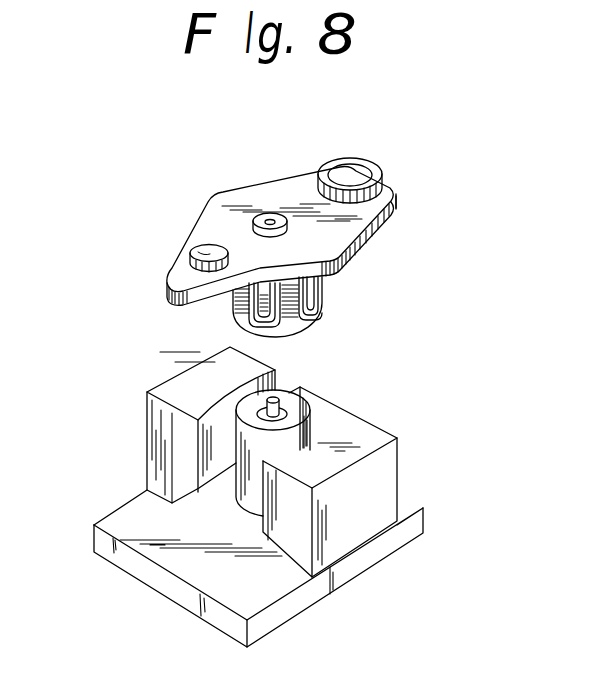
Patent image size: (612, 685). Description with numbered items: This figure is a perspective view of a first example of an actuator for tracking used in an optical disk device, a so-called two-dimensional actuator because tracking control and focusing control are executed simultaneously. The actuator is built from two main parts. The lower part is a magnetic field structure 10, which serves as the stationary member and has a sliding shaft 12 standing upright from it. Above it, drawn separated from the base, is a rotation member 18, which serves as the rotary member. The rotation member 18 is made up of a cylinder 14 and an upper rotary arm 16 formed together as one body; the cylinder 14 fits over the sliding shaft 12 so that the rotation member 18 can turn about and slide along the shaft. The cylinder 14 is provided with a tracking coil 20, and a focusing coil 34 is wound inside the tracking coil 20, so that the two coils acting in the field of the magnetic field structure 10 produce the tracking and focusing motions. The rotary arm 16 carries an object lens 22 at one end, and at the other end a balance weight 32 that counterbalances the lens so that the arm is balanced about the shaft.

The magnetic field structure 10 is at (372, 482).
The sliding shaft 12 is at (290, 390).
The cylinder 14 is at (297, 338).
The rotary arm 16 is at (216, 229).
The rotation member 18 is at (263, 207).
The tracking coil 20 is at (325, 297).
The object lens 22 is at (378, 161).
The balance weight 32 is at (179, 259).
The focusing coil 34 is at (233, 317).